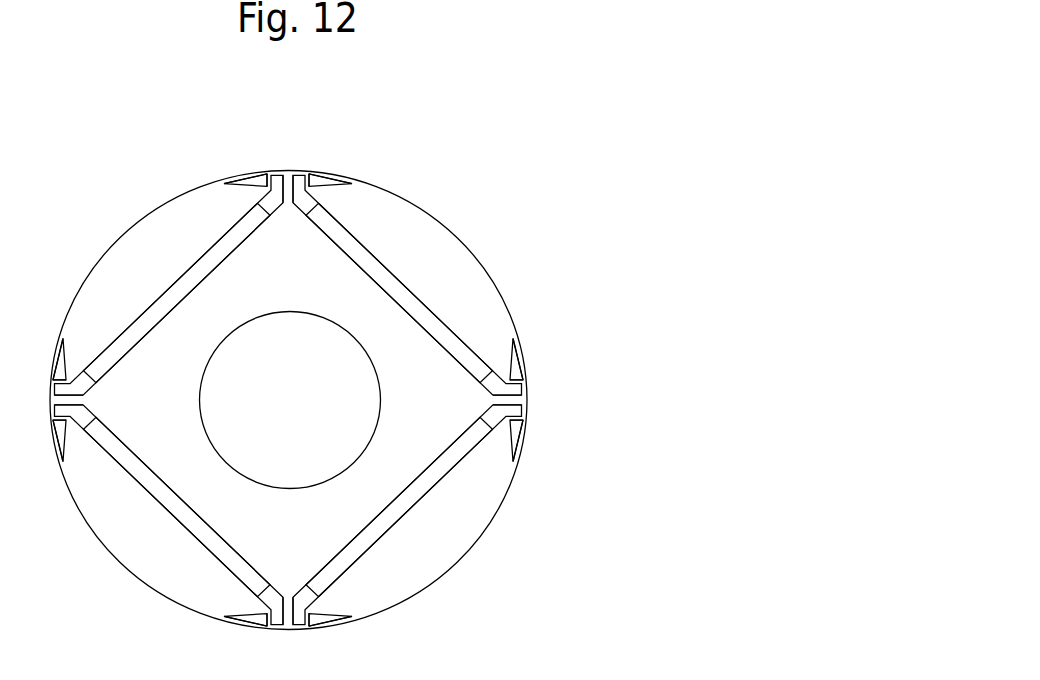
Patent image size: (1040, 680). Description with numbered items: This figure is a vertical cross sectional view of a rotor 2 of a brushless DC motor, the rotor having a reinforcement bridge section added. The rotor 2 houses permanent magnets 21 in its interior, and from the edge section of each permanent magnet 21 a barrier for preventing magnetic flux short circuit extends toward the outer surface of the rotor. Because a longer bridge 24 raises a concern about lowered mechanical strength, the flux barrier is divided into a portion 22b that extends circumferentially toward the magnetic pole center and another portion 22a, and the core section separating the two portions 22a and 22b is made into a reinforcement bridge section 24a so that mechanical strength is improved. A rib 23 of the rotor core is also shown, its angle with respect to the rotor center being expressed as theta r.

The rotor 2 is at (517, 493).
The permanent magnet 21 is at (403, 290).
The portion of flux barrier 22a is at (297, 177).
The portion of flux barrier 22b is at (327, 178).
The rib 23 is at (287, 175).
The bridge 24 is at (338, 175).
The reinforcement bridge section 24a is at (307, 184).